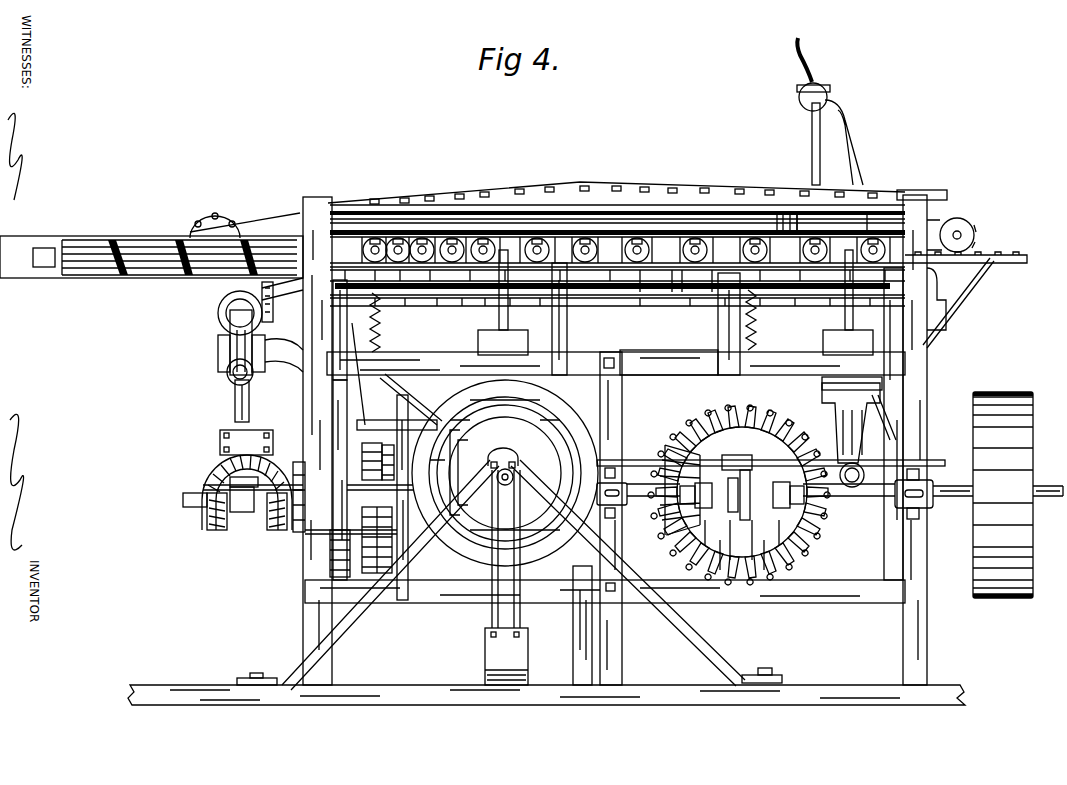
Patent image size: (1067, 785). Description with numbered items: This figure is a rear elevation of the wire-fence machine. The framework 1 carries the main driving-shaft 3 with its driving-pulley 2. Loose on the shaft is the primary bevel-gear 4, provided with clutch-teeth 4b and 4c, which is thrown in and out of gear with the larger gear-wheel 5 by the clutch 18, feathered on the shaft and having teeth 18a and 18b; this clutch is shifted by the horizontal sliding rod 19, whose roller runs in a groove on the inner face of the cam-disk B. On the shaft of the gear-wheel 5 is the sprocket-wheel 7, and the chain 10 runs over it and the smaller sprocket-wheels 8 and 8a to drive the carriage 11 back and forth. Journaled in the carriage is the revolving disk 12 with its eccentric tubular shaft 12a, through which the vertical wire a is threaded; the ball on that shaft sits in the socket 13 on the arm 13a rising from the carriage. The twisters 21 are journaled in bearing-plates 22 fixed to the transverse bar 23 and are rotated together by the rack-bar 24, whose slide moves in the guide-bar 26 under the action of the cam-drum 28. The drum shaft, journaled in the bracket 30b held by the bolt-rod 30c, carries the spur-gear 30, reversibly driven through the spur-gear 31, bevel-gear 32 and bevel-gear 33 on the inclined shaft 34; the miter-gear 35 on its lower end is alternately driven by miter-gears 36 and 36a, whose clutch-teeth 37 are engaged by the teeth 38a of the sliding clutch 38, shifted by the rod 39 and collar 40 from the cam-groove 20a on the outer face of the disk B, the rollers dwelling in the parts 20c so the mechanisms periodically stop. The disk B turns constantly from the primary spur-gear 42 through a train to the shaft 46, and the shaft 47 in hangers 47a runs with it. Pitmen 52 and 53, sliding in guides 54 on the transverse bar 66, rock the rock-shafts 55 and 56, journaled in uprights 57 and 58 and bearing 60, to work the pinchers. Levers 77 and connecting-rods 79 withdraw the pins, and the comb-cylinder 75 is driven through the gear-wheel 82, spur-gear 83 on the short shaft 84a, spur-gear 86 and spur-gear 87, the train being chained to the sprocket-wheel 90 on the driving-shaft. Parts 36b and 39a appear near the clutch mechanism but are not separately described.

The framework 1 is at (920, 560).
The driving-pulley 2 is at (1003, 495).
The main driving-shaft 3 is at (183, 499).
The primary bevel-gear 4 is at (822, 522).
The clutch-teeth 4b is at (668, 528).
The clutch-teeth 4c is at (682, 490).
The larger gear-wheel 5 is at (742, 505).
The sprocket-wheel 7 is at (752, 420).
The smaller sprocket-wheel 8 is at (951, 235).
The smaller sprocket-wheel 8a is at (215, 225).
The chain 10 is at (256, 220).
The slide or carriage 11 is at (822, 222).
The revolving disk 12 is at (345, 235).
The tubular shaft 12a is at (812, 126).
The socket 13 is at (800, 84).
The standard or arm 13a is at (845, 125).
The vertical wire a is at (808, 63).
The clutch 18 is at (728, 487).
The clutch-teeth 18a is at (696, 487).
The clutch-teeth 18b is at (788, 487).
The horizontal sliding rod 19 is at (932, 460).
The cam-groove 20a is at (517, 452).
The cam-groove part 20c is at (515, 472).
The twisters 21 is at (617, 250).
The bearing-plate 22 is at (653, 263).
The transverse bar 23 is at (724, 249).
The rack-bar 24 is at (998, 264).
The guide-bar 26 is at (50, 240).
The cam-drum 28 is at (150, 242).
The spur-gear 30 is at (324, 300).
The bracket 30b is at (100, 238).
The bolt-rod 30c is at (120, 238).
The spur-gear 31 is at (336, 305).
The bevel-gear 32 is at (282, 300).
The bevel-gear 33 is at (218, 308).
The inclined shaft 34 is at (336, 318).
The larger miter-gear 35 is at (220, 449).
The miter-gear 36 is at (215, 532).
The miter-gear 36a is at (277, 532).
The gear 36b is at (295, 462).
The clutch-teeth 37 is at (205, 515).
The sliding clutch 38 is at (245, 513).
The clutch teeth 38a is at (232, 512).
The sliding rod 39 is at (205, 484).
The gear stack 39a is at (326, 553).
The collar 40 is at (244, 475).
The primary spur-gear 42 is at (426, 505).
The shaft 46 is at (512, 490).
The shaft 47 is at (862, 475).
The hangers 47a is at (835, 408).
The pitman 52 is at (505, 314).
The pitman 53 is at (845, 314).
The vertical guides 54 is at (675, 342).
The rock-shaft 55 is at (468, 291).
The rock-shaft 56 is at (788, 292).
The upright 57 is at (567, 323).
The upright 58 is at (737, 324).
The bearing 60 is at (898, 288).
The transverse bar 66 is at (616, 362).
The comb-cylinder 75 is at (646, 410).
The levers 77 is at (900, 418).
The connecting-rods 79 is at (892, 380).
The gear-wheel 82 is at (397, 439).
The secondary spur-gear 83 is at (432, 542).
The short shaft 84a is at (377, 600).
The spur-gear 86 is at (330, 560).
The spur-gear 87 is at (345, 508).
The sprocket-wheel 90 is at (297, 534).
The cam-disk B is at (505, 473).